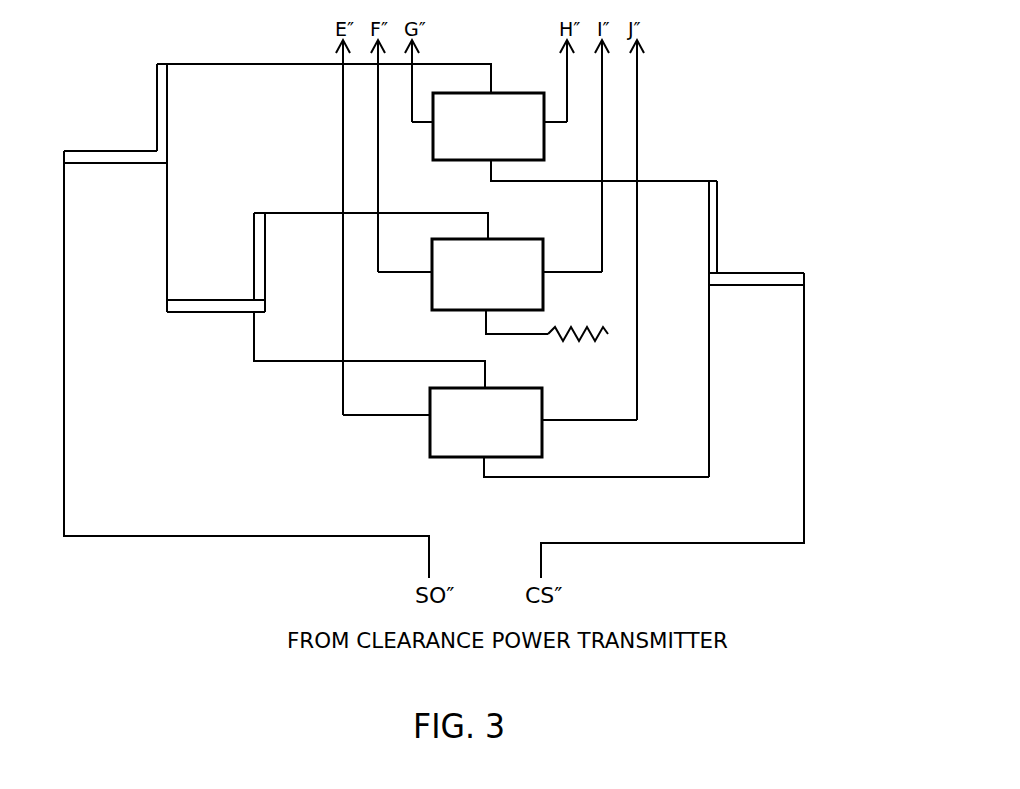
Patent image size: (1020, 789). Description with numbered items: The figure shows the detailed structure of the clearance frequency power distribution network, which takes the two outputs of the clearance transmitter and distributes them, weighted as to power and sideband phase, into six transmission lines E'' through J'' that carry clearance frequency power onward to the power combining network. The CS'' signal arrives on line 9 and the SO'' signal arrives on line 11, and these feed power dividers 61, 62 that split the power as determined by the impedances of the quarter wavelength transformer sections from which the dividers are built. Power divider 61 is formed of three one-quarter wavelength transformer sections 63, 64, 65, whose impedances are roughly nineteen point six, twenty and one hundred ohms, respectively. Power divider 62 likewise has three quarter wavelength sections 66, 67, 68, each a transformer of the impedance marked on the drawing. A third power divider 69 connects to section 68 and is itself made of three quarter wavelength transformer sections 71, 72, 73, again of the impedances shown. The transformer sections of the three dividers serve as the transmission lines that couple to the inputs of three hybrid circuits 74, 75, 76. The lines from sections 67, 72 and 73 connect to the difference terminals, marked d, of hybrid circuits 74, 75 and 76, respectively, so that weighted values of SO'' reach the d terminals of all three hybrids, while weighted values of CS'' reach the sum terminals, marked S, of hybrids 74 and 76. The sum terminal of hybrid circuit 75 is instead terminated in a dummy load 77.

The line 9 is at (632, 543).
The line 11 is at (206, 536).
The power divider 61 is at (707, 285).
The power divider 62 is at (170, 157).
The quarter wavelength transformer section 63 is at (785, 286).
The quarter wavelength transformer section 64 is at (708, 215).
The quarter wavelength transformer section 65 is at (710, 415).
The quarter wavelength transformer section 66 is at (125, 163).
The quarter wavelength transformer section 67 is at (157, 94).
The quarter wavelength transformer section 68 is at (169, 194).
The power divider 69 is at (250, 323).
The quarter wavelength transformer section 71 is at (190, 314).
The quarter wavelength transformer section 72 is at (253, 228).
The quarter wavelength transformer section 73 is at (254, 330).
The hybrid circuit 74 is at (545, 156).
The hybrid circuit 75 is at (543, 247).
The hybrid circuit 76 is at (543, 405).
The dummy load 77 is at (582, 334).